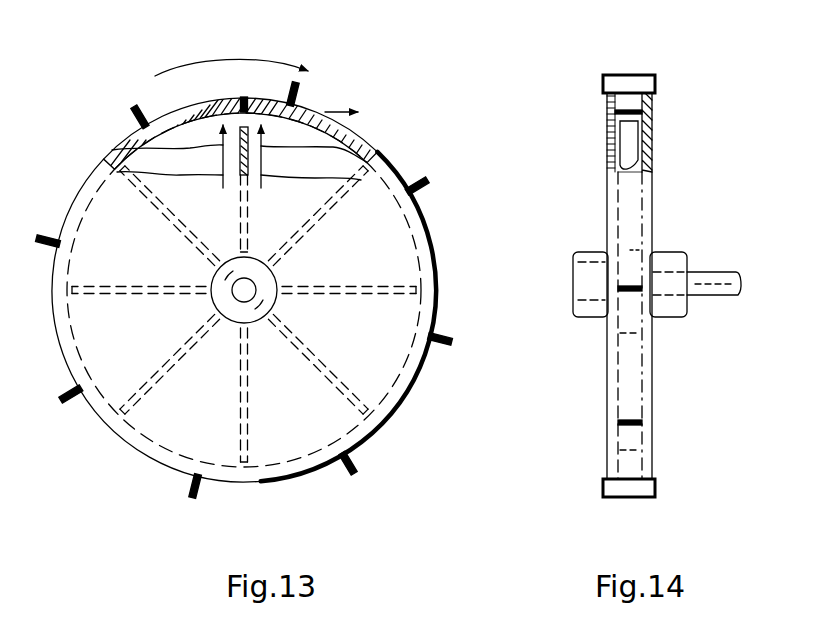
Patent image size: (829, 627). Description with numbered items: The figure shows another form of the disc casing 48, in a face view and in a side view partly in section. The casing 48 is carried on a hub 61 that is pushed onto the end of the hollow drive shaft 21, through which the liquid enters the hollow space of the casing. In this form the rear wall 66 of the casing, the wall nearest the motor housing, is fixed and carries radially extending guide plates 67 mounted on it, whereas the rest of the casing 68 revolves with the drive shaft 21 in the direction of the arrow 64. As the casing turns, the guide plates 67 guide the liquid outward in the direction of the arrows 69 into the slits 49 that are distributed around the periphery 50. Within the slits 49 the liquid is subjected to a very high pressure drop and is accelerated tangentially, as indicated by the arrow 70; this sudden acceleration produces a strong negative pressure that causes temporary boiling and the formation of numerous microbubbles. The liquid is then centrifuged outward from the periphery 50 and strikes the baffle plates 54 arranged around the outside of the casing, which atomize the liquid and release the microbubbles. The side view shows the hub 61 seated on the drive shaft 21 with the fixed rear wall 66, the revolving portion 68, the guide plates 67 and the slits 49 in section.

In FIG. 14, the drive shaft 21 is at (700, 278).
In FIG. 13, the disc casing 48 is at (190, 422).
In FIG. 14, the disc casing 48 is at (612, 330).
In FIG. 13, the slits 49 is at (243, 98).
In FIG. 13, the periphery 50 is at (362, 124).
In FIG. 13, the baffle plates 54 is at (440, 337).
In FIG. 14, the baffle plates 54 is at (630, 84).
In FIG. 14, the hub 61 is at (672, 307).
In FIG. 13, the arrow 64 is at (184, 70).
In FIG. 14, the rear wall 66 is at (643, 192).
In FIG. 13, the guide plates 67 is at (142, 160).
In FIG. 14, the guide plates 67 is at (630, 143).
In FIG. 14, the rest of the casing 68 is at (615, 135).
In FIG. 13, the arrows 69 is at (165, 142).
In FIG. 13, the arrow 70 is at (330, 104).